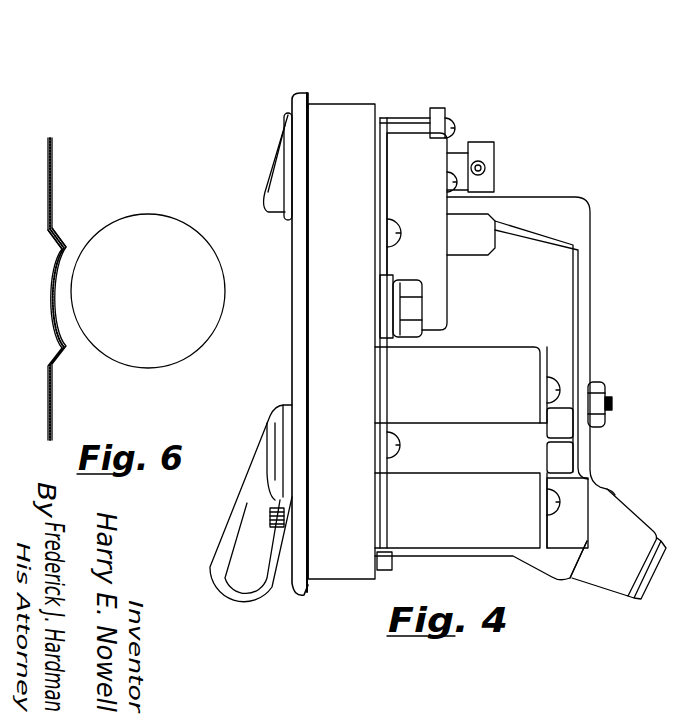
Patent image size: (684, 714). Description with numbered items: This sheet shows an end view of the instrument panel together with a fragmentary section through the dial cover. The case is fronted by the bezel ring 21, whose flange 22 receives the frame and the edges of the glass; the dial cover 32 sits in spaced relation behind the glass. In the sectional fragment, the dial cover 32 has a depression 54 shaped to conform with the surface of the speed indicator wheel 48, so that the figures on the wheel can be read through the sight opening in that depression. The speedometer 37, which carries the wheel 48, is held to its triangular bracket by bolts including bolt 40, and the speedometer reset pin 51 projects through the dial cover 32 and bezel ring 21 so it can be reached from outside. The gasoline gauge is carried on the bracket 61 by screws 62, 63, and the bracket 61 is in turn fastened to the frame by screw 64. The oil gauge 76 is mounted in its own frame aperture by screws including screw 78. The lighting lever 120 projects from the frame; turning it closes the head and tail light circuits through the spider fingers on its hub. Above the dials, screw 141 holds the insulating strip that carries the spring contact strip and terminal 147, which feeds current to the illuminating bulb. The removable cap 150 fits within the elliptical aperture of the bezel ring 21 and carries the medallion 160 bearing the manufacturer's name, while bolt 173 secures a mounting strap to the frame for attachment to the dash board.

In FIG. 4, the bezel ring 21 is at (300, 91).
In FIG. 4, the flange 22 is at (347, 104).
In FIG. 6, the dial cover 32 is at (48, 395).
In FIG. 4, the speedometer 37 is at (582, 226).
In FIG. 4, the bolt 40 is at (612, 404).
In FIG. 6, the speed indicator wheel 48 is at (160, 368).
In FIG. 4, the speedometer reset pin 51 is at (270, 513).
In FIG. 6, the depression 54 is at (56, 240).
In FIG. 4, the bracket 61 is at (464, 453).
In FIG. 4, the screw 62 is at (556, 508).
In FIG. 4, the screw 63 is at (553, 377).
In FIG. 4, the screw 64 is at (398, 445).
In FIG. 4, the oil gauge 76 is at (438, 281).
In FIG. 4, the screw 78 is at (394, 228).
In FIG. 4, the lighting lever 120 is at (215, 590).
In FIG. 4, the screw 141 is at (453, 121).
In FIG. 4, the terminal 147 is at (488, 182).
In FIG. 4, the removable cap 150 is at (263, 197).
In FIG. 4, the medallion 160 is at (269, 165).
In FIG. 4, the bolt 173 is at (412, 310).